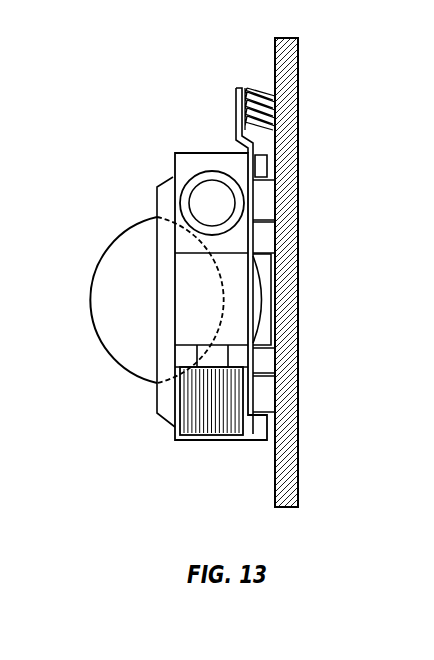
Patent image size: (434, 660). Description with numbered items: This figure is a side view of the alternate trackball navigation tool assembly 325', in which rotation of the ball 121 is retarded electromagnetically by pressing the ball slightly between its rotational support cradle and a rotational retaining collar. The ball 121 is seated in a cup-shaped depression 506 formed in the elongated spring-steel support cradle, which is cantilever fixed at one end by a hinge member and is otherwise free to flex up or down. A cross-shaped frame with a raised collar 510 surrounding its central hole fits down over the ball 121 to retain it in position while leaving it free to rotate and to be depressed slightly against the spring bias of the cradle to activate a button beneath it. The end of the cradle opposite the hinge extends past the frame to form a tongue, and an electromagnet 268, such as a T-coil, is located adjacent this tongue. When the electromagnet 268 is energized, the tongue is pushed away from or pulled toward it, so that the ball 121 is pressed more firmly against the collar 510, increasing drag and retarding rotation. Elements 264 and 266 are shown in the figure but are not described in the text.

The trackball navigation tool assembly 325' is at (199, 255).
The electromagnet 268 is at (263, 85).
The housing 264 is at (195, 183).
The raised collar 510 is at (158, 196).
The ball 121 is at (92, 282).
The cup-shaped depression 506 is at (267, 300).
The circuit board 266 is at (265, 392).